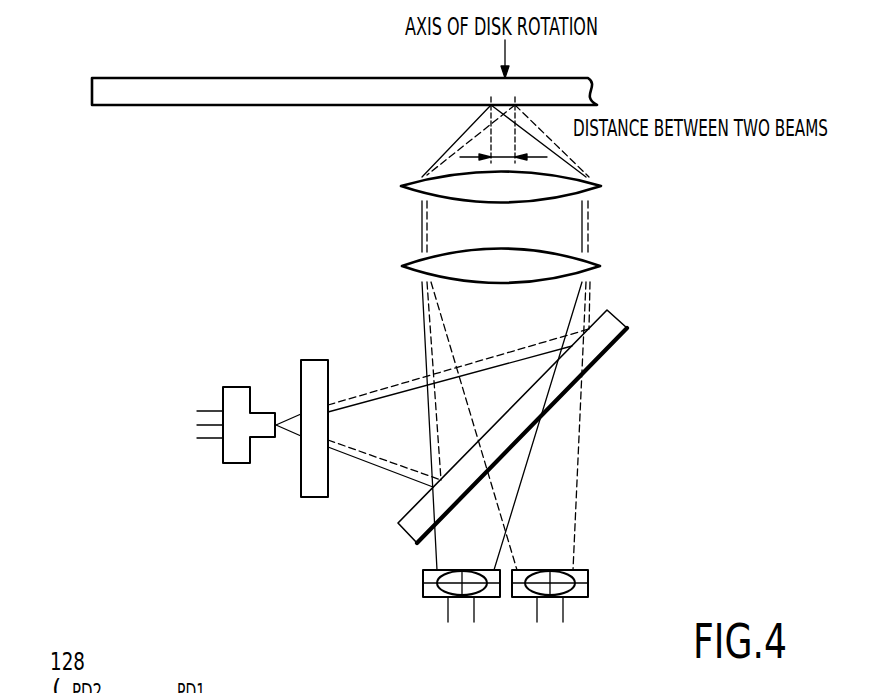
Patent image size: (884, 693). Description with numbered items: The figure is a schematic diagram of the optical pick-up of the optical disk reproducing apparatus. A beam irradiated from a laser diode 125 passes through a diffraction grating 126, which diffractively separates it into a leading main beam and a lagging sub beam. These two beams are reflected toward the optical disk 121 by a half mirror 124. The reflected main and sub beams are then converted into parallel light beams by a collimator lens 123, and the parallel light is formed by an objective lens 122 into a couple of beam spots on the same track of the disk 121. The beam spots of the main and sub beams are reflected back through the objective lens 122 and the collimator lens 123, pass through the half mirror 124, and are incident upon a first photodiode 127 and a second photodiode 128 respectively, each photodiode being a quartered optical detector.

The optical disk 121 is at (297, 106).
The objective lens 122 is at (601, 186).
The collimator lens 123 is at (601, 266).
The half mirror 124 is at (617, 318).
The laser diode 125 is at (230, 387).
The diffraction grating 126 is at (316, 360).
The first photodiode 127 is at (423, 583).
The second photodiode 128 is at (588, 583).